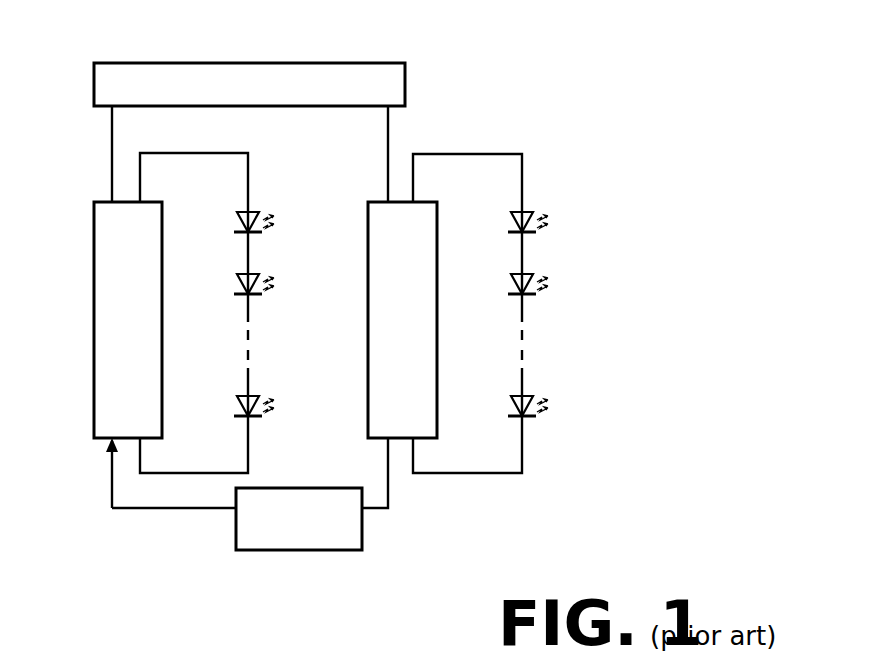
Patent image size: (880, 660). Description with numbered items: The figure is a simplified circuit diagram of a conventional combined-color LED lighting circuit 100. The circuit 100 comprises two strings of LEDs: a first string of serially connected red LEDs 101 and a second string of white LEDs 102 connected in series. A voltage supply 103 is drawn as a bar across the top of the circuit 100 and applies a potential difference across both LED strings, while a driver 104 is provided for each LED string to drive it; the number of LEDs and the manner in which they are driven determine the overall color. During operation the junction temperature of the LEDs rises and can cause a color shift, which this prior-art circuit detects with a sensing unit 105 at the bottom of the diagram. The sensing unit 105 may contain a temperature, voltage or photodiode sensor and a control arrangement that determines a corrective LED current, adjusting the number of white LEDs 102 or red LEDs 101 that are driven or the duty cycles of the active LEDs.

The combined-color LED lighting circuit 100 is at (603, 154).
The red LEDs 101 is at (512, 222).
The white LEDs 102 is at (238, 222).
The voltage supply 103 is at (360, 63).
The driver 104 is at (94, 258).
The sensing unit 105 is at (295, 552).